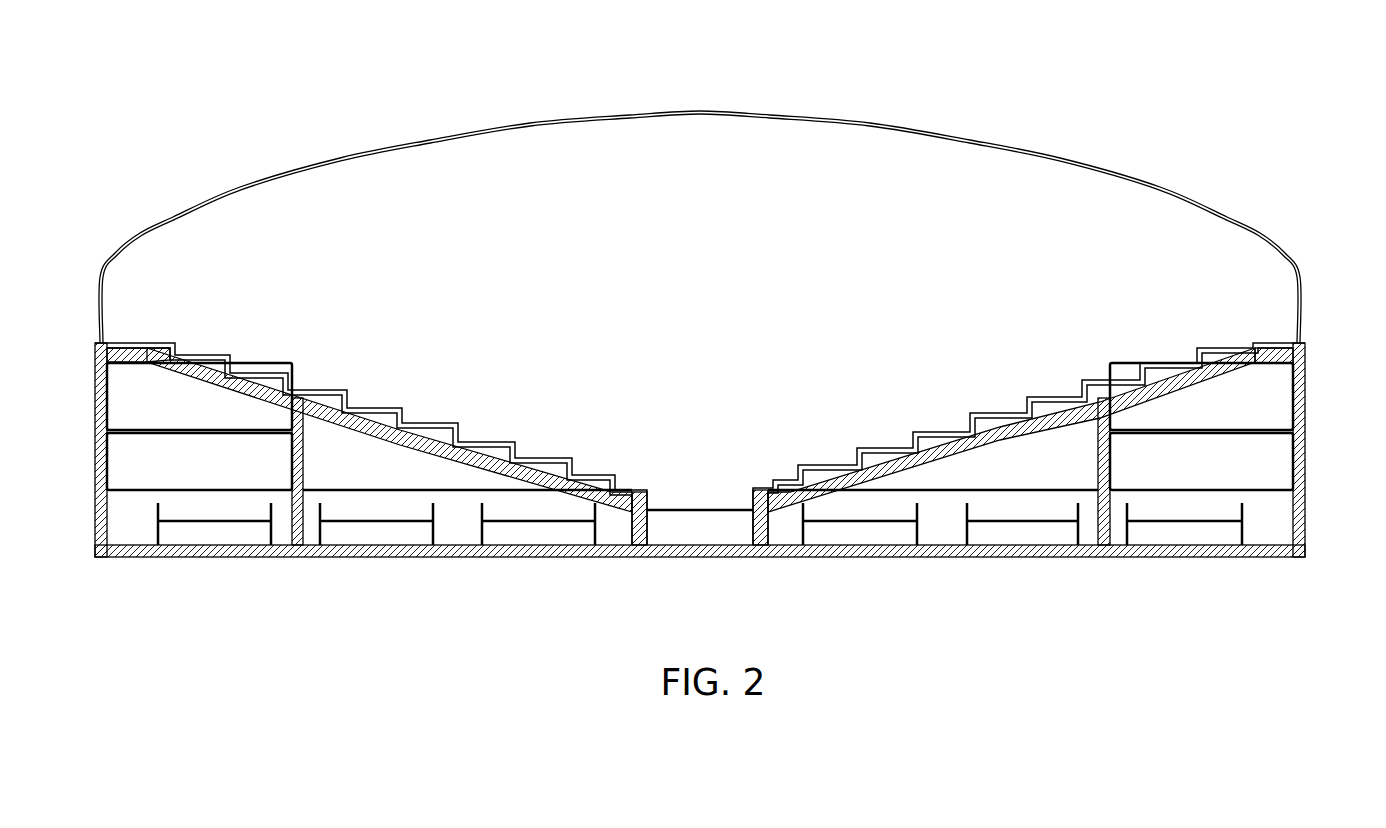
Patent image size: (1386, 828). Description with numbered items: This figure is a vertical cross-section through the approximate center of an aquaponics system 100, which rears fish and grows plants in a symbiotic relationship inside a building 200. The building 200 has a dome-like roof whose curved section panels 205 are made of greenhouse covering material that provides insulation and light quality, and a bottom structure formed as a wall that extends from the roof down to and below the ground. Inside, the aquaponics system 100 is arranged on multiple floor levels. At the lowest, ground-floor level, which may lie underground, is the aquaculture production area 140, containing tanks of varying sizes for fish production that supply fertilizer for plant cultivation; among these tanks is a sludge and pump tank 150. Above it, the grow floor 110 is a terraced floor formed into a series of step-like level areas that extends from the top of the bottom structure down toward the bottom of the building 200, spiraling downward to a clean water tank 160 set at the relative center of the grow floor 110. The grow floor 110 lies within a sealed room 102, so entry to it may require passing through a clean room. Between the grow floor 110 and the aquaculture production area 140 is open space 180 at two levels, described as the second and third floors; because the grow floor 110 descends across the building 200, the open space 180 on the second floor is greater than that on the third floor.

The aquaponics system 100 is at (700, 403).
The sealed room 102 is at (707, 140).
The grow floor 110 is at (430, 421).
The aquaculture production area 140 is at (87, 492).
The sludge and pump tank 150 is at (700, 560).
The clean water tank 160 is at (722, 508).
The open space 180 is at (87, 343).
The building 200 is at (730, 196).
The curved section panels 205 is at (228, 193).